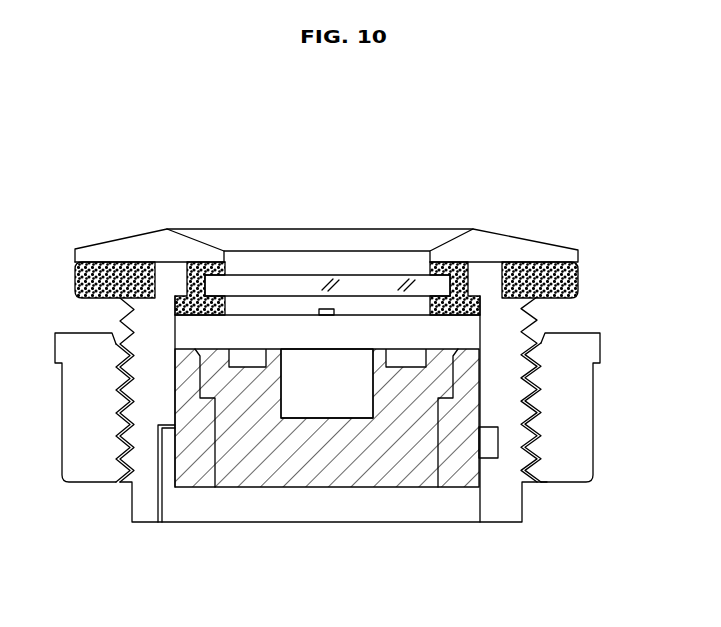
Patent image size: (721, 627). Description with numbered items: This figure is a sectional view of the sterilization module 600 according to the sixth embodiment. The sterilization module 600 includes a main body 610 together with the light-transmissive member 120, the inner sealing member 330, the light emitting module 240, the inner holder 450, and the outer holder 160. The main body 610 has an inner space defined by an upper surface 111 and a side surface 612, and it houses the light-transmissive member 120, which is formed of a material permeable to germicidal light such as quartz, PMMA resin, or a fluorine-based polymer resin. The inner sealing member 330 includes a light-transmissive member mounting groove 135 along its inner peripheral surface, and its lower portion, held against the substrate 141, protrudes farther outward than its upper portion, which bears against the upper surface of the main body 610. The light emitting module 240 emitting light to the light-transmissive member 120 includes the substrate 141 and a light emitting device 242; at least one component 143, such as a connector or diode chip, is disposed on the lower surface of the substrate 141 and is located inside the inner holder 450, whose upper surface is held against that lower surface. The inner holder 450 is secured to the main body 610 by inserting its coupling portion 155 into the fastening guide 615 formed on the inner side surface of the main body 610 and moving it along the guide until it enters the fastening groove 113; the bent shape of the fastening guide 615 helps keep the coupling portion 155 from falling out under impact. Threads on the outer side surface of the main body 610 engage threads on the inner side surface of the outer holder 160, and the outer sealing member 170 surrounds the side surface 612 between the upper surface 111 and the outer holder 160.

The sterilization module 600 is at (53, 144).
The main body 610 is at (545, 188).
The side surface 612 is at (494, 310).
The upper surface 111 is at (548, 251).
The light-transmissive member mounting groove 135 is at (218, 262).
The outer sealing member 170 is at (579, 280).
The inner sealing member 330 is at (217, 262).
The light-transmissive member 120 is at (407, 275).
The light emitting module 240 is at (369, 184).
The substrate 141 is at (267, 337).
The light emitting device 242 is at (321, 310).
The component 143 is at (357, 357).
The inner holder 450 is at (268, 470).
The coupling portion 155 is at (488, 445).
The fastening groove 113 is at (488, 462).
The fastening guide 615 is at (166, 466).
The outer holder 160 is at (580, 413).